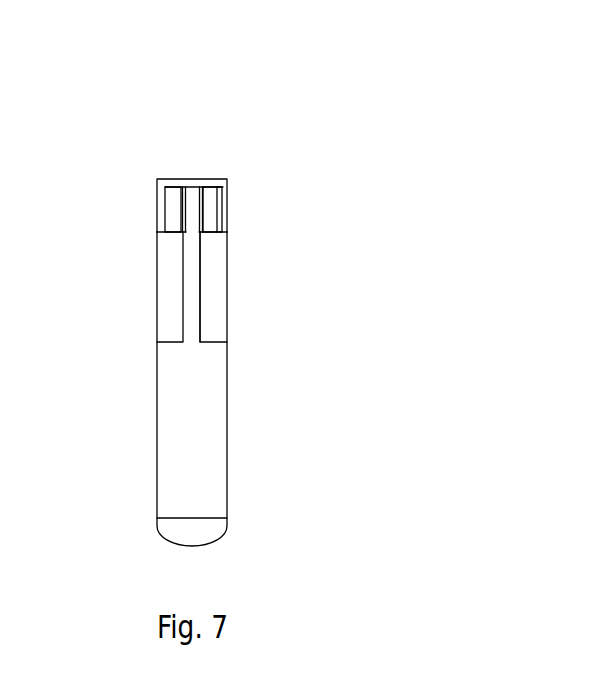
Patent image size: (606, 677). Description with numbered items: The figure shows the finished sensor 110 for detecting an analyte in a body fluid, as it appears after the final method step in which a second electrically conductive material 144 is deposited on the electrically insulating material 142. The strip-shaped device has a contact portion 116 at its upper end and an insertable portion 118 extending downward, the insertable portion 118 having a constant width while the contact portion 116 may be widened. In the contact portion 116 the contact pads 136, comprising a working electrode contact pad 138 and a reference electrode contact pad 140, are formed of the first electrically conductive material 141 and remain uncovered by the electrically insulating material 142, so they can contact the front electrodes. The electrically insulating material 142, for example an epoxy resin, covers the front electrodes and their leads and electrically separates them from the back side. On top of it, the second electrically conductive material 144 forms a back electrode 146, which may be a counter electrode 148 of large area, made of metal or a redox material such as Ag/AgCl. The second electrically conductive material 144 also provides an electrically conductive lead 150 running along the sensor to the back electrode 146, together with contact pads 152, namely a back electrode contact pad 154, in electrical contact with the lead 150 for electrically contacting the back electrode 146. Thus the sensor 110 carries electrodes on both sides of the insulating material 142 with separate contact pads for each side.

The sensor 110 is at (421, 177).
The contact portion 116 is at (245, 196).
The insertable portion 118 is at (243, 388).
The contact pads 136 is at (189, 169).
The working electrode contact pad 138 is at (215, 192).
The reference electrode contact pad 140 is at (173, 192).
The first electrically conductive material 141 is at (189, 169).
The electrically insulating material 142 is at (215, 298).
The second electrically conductive material 144 is at (226, 290).
The back electrode 146 is at (290, 472).
The counter electrode 148 is at (215, 453).
The electrically conductive lead 150 is at (192, 278).
The contact pads 152 is at (237, 147).
The back electrode contact pad 154 is at (188, 192).